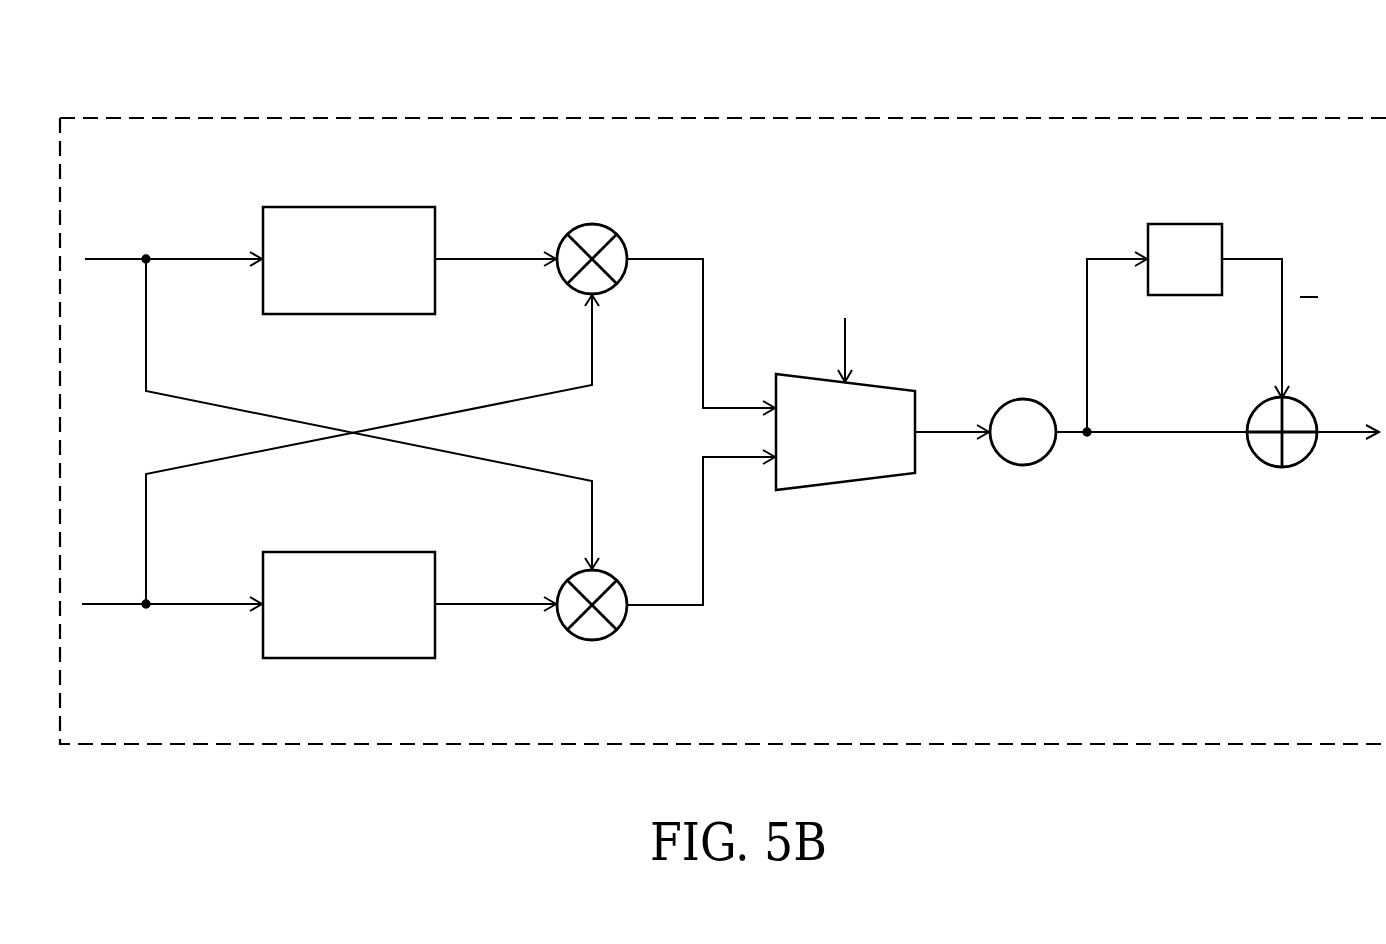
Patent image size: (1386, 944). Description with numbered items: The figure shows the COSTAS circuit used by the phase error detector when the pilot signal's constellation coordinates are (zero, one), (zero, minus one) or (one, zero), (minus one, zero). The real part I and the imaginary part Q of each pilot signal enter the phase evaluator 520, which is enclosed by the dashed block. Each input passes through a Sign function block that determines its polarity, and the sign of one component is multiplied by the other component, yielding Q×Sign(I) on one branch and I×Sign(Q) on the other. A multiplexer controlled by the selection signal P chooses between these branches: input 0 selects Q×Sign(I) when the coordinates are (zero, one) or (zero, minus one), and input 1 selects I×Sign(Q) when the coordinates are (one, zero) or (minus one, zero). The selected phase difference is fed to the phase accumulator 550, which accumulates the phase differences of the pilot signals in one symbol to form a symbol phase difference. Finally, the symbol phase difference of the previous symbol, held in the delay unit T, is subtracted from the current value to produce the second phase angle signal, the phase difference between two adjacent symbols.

The phase evaluator 520 is at (740, 117).
The phase accumulator 550 is at (1023, 398).
The multiplexer input 1 (sign(I) x Q path) 1 is at (714, 339).
The multiplexer input 0 (sign(Q) x I path) 0 is at (714, 522).